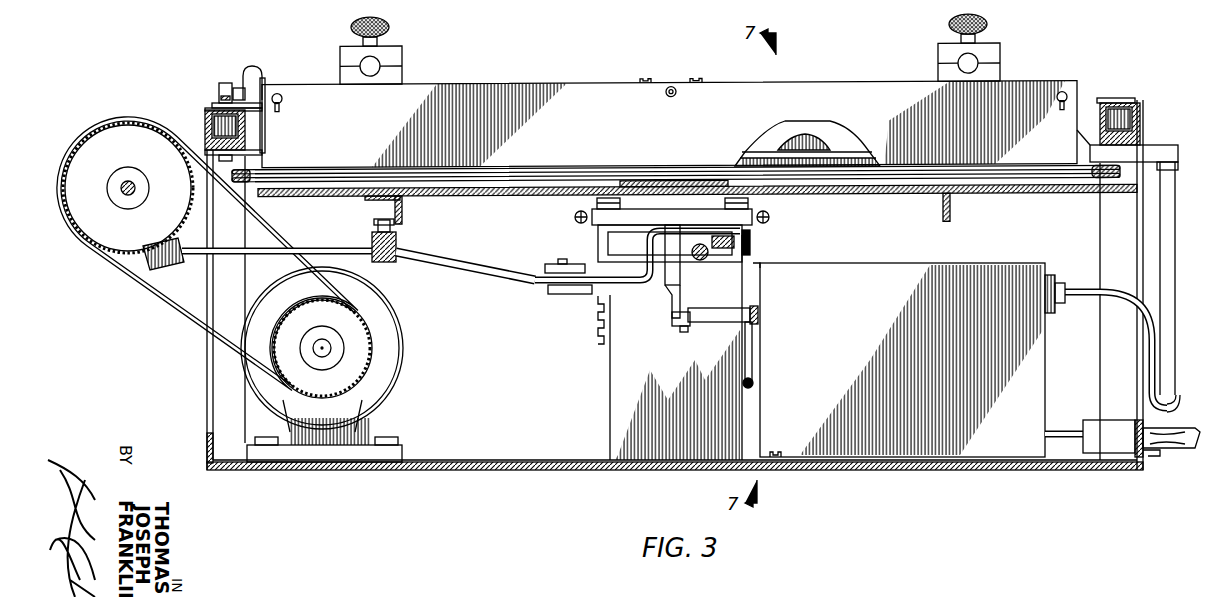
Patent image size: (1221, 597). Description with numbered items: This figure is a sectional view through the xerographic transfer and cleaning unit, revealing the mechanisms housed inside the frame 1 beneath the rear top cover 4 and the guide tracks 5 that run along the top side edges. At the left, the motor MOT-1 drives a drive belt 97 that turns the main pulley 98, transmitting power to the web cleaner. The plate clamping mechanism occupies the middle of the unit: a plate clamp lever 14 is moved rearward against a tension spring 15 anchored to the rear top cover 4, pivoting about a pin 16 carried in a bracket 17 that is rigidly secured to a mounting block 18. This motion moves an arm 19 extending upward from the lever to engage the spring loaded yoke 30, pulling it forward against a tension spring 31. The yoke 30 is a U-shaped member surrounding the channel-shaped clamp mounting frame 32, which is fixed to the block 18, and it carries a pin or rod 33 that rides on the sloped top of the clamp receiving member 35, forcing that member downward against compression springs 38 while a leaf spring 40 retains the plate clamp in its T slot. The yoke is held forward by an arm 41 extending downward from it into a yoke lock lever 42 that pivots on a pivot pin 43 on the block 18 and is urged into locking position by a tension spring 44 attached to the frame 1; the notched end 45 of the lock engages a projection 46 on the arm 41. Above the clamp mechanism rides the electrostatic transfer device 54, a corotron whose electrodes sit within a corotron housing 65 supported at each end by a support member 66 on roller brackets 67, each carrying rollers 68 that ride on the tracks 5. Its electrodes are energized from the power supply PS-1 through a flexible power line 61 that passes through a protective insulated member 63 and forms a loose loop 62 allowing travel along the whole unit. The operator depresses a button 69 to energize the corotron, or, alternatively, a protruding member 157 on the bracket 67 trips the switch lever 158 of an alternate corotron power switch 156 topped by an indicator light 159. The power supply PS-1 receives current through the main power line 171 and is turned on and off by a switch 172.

The frame 1 is at (207, 395).
The rear top cover 4 is at (864, 198).
The guide tracks 5 is at (212, 106).
The plate clamp lever 14 is at (162, 266).
The tension spring 15 is at (372, 238).
The pin 16 is at (558, 260).
The bracket 17 is at (593, 292).
The mounting block 18 is at (610, 416).
The arm 19 is at (633, 287).
The spring loaded yoke 30 is at (712, 212).
The tension spring 31 is at (578, 212).
The pin or rod 33 is at (575, 218).
The clamp mounting frame 32 is at (598, 246).
The clamp receiving member 35 is at (750, 242).
The compression springs 38 is at (700, 260).
The leaf spring 40 is at (712, 240).
The arm 41 is at (681, 292).
The yoke lock lever 42 is at (705, 308).
The pivot pin 43 is at (758, 315).
The tension spring 44 is at (753, 381).
The notched end 45 is at (672, 320).
The projection 46 is at (686, 330).
The electrostatic transfer device 54 is at (838, 129).
The flexible power line 61 is at (1175, 224).
The loose loop 62 is at (1172, 395).
The protective insulated member 63 is at (1156, 145).
The corotron housing 65 is at (832, 86).
The support member 66 is at (279, 113).
The roller bracket 67 is at (213, 108).
The roller 68 is at (205, 122).
The button 69 is at (677, 97).
The drive belt 97 is at (100, 128).
The main pulley 98 is at (145, 132).
The alternate corotron power switch 156 is at (265, 88).
The protruding member 157 is at (222, 83).
The switch lever 158 is at (238, 88).
The indicator light 159 is at (258, 70).
The main power line 171 is at (1178, 428).
The switch 172 is at (1160, 450).
The motor MOT-1 is at (400, 384).
The power supply PS-1 is at (905, 263).